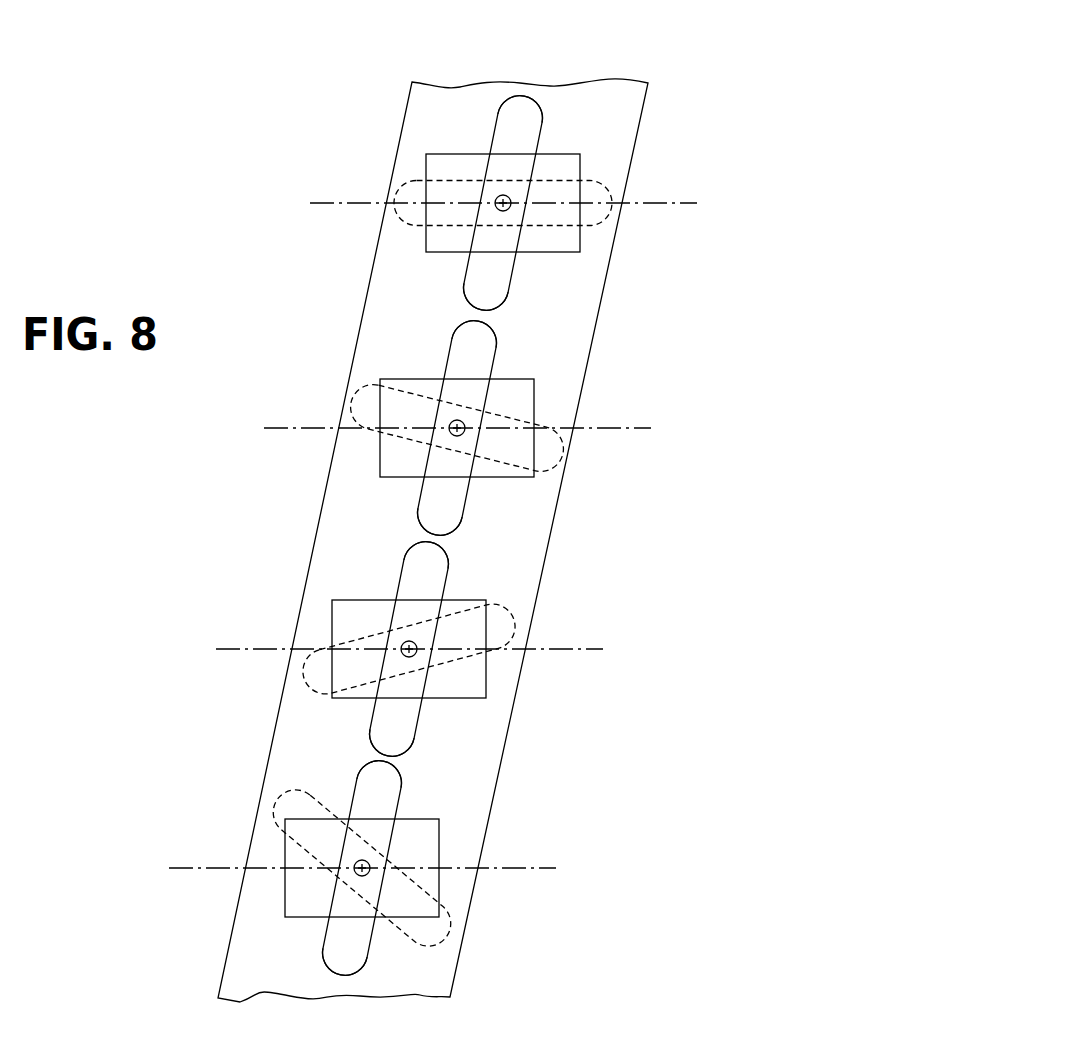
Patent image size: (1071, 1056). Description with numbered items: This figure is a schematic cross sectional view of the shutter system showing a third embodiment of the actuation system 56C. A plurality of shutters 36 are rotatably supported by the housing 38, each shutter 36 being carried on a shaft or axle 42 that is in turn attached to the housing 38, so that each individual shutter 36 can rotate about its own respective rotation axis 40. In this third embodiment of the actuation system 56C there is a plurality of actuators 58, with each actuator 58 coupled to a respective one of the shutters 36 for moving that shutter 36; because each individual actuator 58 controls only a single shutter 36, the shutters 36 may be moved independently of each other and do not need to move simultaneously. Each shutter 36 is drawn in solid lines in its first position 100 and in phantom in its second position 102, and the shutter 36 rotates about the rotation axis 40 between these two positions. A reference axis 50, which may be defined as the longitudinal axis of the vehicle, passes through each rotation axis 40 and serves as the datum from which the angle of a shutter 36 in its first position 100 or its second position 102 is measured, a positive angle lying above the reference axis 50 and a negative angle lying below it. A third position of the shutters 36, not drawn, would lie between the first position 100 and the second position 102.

The third embodiment of the actuation system 56C is at (675, 105).
The housing 38 is at (602, 313).
The shutter 36 is at (433, 515).
The first position 100 is at (473, 536).
The shaft or axle 42 is at (409, 506).
The rotation axis 40 is at (330, 578).
The actuator 58 is at (492, 524).
The second position 102 is at (600, 227).
The reference axis 50 is at (468, 532).